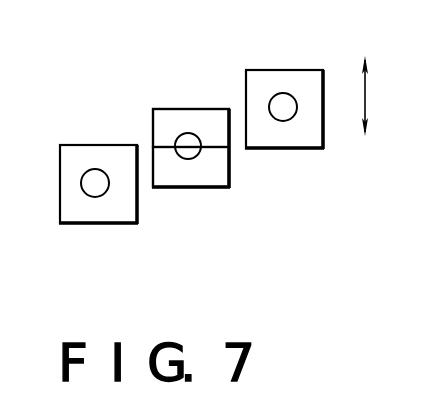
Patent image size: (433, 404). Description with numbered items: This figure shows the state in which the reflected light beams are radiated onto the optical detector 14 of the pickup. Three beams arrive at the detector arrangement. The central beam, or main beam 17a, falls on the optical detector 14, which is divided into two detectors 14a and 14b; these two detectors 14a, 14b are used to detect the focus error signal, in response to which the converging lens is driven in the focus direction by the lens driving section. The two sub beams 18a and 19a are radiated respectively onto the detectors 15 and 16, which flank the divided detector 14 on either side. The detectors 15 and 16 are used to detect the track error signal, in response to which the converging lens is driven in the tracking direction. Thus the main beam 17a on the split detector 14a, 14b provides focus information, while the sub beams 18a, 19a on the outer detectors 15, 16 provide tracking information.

The optical detector 14 is at (213, 109).
The detector 14a is at (172, 109).
The detector 14b is at (179, 190).
The detector 15 is at (100, 145).
The detector 16 is at (284, 70).
The central beam (main beam) 17a is at (197, 160).
The sub beam 18a is at (95, 197).
The sub beam 19a is at (283, 121).